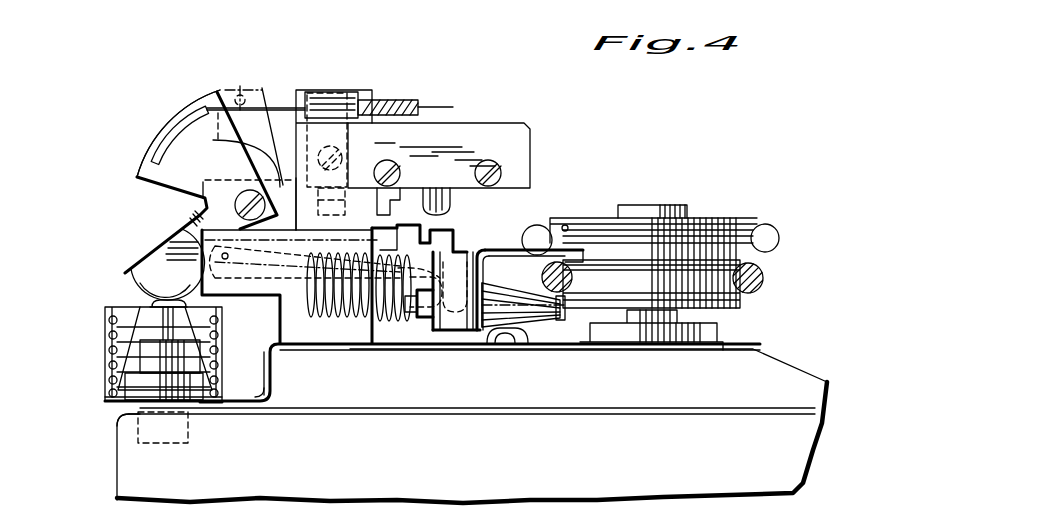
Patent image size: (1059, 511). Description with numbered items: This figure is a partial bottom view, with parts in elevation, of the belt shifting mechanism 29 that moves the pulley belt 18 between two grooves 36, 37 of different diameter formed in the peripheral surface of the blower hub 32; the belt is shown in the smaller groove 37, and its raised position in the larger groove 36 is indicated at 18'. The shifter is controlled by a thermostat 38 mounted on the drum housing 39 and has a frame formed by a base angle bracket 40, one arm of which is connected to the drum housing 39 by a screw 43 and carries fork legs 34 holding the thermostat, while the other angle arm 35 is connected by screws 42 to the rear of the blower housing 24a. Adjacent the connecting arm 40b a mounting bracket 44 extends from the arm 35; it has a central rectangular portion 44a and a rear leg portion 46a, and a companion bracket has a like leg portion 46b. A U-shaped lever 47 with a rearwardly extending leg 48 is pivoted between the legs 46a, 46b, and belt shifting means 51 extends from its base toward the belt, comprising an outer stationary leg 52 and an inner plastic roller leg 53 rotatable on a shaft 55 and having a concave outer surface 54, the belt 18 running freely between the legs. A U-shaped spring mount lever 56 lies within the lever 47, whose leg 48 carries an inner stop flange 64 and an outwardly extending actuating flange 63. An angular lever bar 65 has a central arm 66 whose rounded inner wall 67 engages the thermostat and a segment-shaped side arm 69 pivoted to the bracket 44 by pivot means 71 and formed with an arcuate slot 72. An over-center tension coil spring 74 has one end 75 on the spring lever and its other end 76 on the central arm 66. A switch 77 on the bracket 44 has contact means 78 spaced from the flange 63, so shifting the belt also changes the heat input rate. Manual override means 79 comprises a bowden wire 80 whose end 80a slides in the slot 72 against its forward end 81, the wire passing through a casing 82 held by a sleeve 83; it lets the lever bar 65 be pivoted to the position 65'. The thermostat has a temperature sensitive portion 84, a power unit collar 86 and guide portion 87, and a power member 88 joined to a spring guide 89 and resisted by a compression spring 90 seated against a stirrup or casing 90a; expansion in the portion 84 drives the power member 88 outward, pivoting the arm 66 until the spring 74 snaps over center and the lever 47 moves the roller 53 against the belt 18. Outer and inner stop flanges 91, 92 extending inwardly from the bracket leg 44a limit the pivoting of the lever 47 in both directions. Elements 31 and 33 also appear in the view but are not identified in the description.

The pulley belt 18 is at (674, 285).
The raised belt position 18' is at (657, 215).
The blower housing 24a is at (457, 400).
The belt shifting mechanism 29 is at (148, 145).
The knob 31 is at (645, 208).
The blower hub 32 is at (590, 218).
The mounting lug 33 is at (212, 403).
The fork legs 34 is at (135, 414).
The front angle arm 35 is at (432, 347).
The larger groove 36 is at (567, 226).
The smaller groove 37 is at (590, 292).
The thermostat 38 is at (104, 388).
The drum housing 39 is at (117, 470).
The base angle bracket 40 is at (276, 390).
The angle bracket connecting arm 40b is at (266, 372).
The bolts or screws 42 is at (517, 345).
The bolt or screw 43 is at (256, 390).
The mounting bracket 44 is at (295, 150).
The central rectangular portion 44a is at (360, 203).
The rearwardly extending leg portion 46a is at (232, 290).
The rearwardly extending leg portion 46b is at (213, 143).
The U-shaped lever 47 is at (447, 248).
The lever leg 48 is at (450, 332).
The belt shifting means 51 is at (481, 250).
The outer stationary leg 52 is at (498, 252).
The inner plastic roller leg 53 is at (488, 290).
The concave outer surface 54 is at (536, 324).
The shaft 55 is at (540, 293).
The spring mount lever 56 is at (425, 310).
The actuating flange means 63 is at (441, 230).
The inner stop flange means 64 is at (410, 310).
The angular lever bar 65 is at (141, 225).
The manual position of lever bar 65' is at (262, 66).
The central arm 66 is at (150, 270).
The rounded inner wall 67 is at (145, 296).
The side arm 69 is at (187, 106).
The pivot means 71 is at (238, 198).
The arcuate slot 72 is at (175, 128).
The tension coil spring 74 is at (420, 278).
The spring end 75 is at (457, 284).
The spring end 76 is at (166, 270).
The switch 77 is at (523, 125).
The contact means 78 is at (434, 198).
The manual override means 79 is at (340, 91).
The bowden wire 80 is at (289, 104).
The bowden wire end 80a is at (241, 95).
The forward end of slot 81 is at (209, 105).
The casing 82 is at (396, 99).
The sleeve 83 is at (318, 100).
The temperature sensitive portion 84 is at (165, 443).
The power unit collar 86 is at (128, 403).
The power unit guide portion 87 is at (110, 368).
The power member 88 is at (109, 323).
The spring guide 89 is at (110, 345).
The compression spring means 90 is at (218, 326).
The stirrup or casing means 90a is at (150, 308).
The outer stop flange 91 is at (370, 306).
The inner stop flange 92 is at (375, 240).